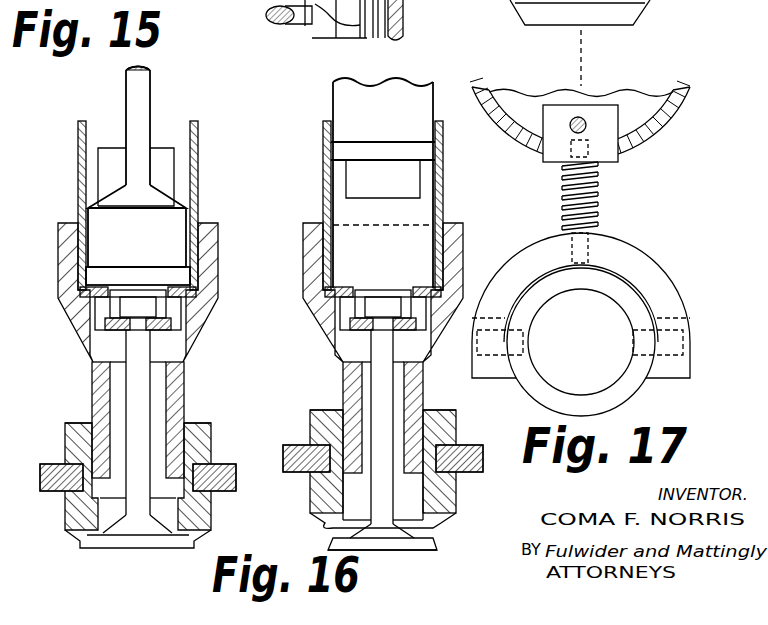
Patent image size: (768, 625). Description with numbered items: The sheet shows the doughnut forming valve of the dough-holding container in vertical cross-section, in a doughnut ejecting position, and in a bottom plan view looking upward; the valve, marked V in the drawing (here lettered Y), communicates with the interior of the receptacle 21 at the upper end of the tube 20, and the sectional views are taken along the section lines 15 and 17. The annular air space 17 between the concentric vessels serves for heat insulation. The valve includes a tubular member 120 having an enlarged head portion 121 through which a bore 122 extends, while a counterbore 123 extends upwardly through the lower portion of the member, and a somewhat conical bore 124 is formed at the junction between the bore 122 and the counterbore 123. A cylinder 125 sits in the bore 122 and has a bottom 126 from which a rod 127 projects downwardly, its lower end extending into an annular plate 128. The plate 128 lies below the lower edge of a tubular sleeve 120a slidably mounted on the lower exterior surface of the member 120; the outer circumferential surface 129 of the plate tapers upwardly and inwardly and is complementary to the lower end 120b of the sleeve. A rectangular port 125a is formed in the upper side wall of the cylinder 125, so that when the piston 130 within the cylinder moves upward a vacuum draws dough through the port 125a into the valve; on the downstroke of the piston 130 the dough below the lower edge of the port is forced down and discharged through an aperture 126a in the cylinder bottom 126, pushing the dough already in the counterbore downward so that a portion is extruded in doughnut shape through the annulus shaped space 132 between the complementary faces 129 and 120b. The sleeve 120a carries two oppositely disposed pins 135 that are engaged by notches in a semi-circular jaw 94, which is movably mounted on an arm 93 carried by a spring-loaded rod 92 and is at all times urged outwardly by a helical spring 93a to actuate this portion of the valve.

In FIG. 15, the cylinder 125 is at (197, 212).
In FIG. 16, the cylinder 125 is at (443, 210).
In FIG. 15, the rectangular port 125a is at (170, 188).
In FIG. 16, the rectangular port 125a is at (414, 193).
In FIG. 15, the piston 130 is at (150, 284).
In FIG. 16, the piston 130 is at (396, 159).
In FIG. 15, the bore 122 is at (197, 245).
In FIG. 16, the bore 122 is at (447, 251).
In FIG. 15, the enlarged head portion 121 is at (221, 262).
In FIG. 16, the enlarged head portion 121 is at (464, 266).
In FIG. 15, the cylinder bottom 126 is at (188, 299).
In FIG. 16, the cylinder bottom 126 is at (336, 290).
In FIG. 15, the aperture 126a is at (150, 310).
In FIG. 16, the aperture 126a is at (390, 297).
In FIG. 15, the conical bore 124 is at (172, 340).
In FIG. 16, the conical bore 124 is at (413, 346).
In FIG. 15, the rod 127 is at (150, 378).
In FIG. 16, the rod 127 is at (396, 400).
In FIG. 15, the counterbore 123 is at (162, 408).
In FIG. 16, the counterbore 123 is at (383, 417).
In FIG. 15, the tubular member 120 is at (186, 396).
In FIG. 16, the tubular member 120 is at (383, 465).
In FIG. 15, the tubular sleeve 120a is at (208, 444).
In FIG. 16, the tubular sleeve 120a is at (456, 424).
In FIG. 17, the tubular sleeve 120a is at (623, 397).
In FIG. 15, the lower end of tubular sleeve 120b is at (193, 534).
In FIG. 16, the lower end of tubular sleeve 120b is at (328, 530).
In FIG. 15, the pins 135 is at (43, 464).
In FIG. 16, the pins 135 is at (282, 458).
In FIG. 17, the pins 135 is at (581, 360).
In FIG. 15, the annular plate 128 is at (163, 550).
In FIG. 16, the annular plate 128 is at (403, 552).
In FIG. 16, the outer circumferential surface 129 is at (437, 541).
In FIG. 16, the annulus shaped space 132 is at (430, 532).
In FIG. 15, the valve assembly Y is at (54, 322).
In FIG. 16, the valve assembly Y is at (302, 322).
In FIG. 17, the spring-loaded rod 92 is at (584, 123).
In FIG. 17, the arm 93 is at (598, 212).
In FIG. 17, the helical spring 93a is at (598, 188).
In FIG. 17, the semi-circular jaw 94 is at (640, 275).
In FIG. 17, the receptacle 21 is at (665, 126).
In FIG. 16, the tube 20 is at (405, 8).
In FIG. 16, the annular air space 17 is at (339, 19).
In FIG. 17, the annular air space 17 is at (660, 38).
In FIG. 17, the section line 15 is at (597, 65).